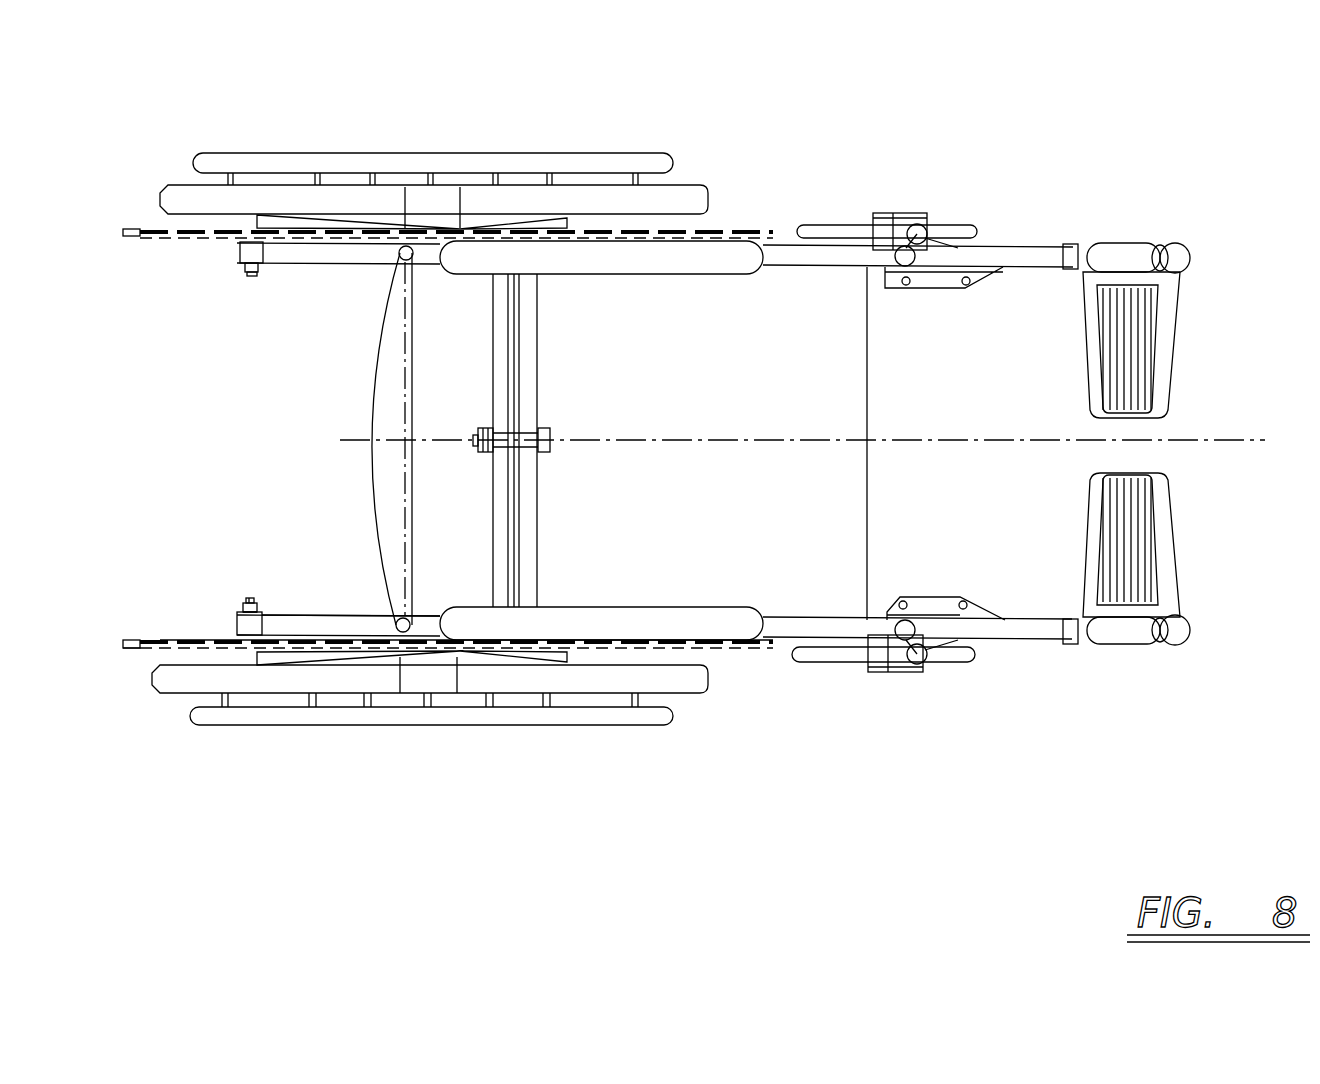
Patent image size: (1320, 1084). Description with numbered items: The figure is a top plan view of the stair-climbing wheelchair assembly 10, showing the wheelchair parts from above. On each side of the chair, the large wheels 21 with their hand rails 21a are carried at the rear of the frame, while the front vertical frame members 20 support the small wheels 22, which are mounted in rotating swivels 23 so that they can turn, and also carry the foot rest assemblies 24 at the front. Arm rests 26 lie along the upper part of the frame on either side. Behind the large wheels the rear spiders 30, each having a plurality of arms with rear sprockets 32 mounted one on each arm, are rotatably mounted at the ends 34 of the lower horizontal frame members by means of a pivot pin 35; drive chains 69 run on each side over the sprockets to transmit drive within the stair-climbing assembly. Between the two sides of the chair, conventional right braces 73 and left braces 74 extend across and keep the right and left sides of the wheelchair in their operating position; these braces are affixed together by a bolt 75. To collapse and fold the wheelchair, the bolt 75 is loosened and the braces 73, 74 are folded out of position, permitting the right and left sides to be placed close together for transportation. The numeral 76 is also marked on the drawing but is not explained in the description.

The assembly 10 is at (350, 240).
The front vertical frame members 20 is at (832, 266).
The large wheels 21 is at (157, 187).
The hand rails 21a is at (267, 153).
The small wheels 22 is at (840, 227).
The rotating swivels 23 is at (930, 217).
The foot rest assemblies 24 is at (1003, 241).
The arm rests 26 is at (690, 275).
The rear spiders 30 is at (212, 640).
The rear sprockets 32 is at (158, 640).
The ends of the lower horizontal frame members 34 is at (302, 615).
The pivot pin 35 is at (250, 603).
The drive chains 69 is at (123, 647).
The right braces 73 is at (513, 512).
The left braces 74 is at (538, 333).
The bolt 75 is at (550, 443).
The hinge pin 76 is at (462, 232).